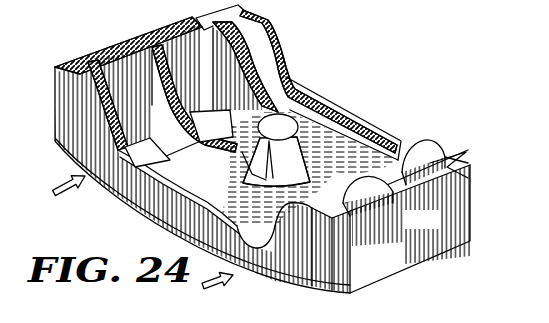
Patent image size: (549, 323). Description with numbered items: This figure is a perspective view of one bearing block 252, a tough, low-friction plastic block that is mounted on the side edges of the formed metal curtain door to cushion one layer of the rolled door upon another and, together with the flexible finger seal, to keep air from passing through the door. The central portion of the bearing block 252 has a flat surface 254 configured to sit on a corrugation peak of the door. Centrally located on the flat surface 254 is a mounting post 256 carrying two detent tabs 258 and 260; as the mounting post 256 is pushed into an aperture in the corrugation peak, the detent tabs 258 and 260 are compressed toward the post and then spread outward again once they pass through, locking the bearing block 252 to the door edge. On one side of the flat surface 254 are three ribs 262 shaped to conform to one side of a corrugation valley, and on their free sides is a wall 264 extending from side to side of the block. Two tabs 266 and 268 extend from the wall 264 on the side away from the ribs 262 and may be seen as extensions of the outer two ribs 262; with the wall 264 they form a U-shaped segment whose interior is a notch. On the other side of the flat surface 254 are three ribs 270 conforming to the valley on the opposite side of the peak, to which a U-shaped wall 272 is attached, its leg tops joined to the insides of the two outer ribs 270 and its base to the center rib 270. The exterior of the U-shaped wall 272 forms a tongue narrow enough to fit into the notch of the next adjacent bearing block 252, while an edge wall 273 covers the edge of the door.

The bearing block 252 is at (375, 63).
The flat surface 254 is at (197, 198).
The mounting post 256 is at (293, 179).
The detent tab 258 is at (242, 152).
The detent tab 260 is at (320, 127).
The rib 262 is at (182, 38).
The wall 264 is at (130, 52).
The tab 266 is at (77, 67).
The tab 268 is at (218, 8).
The rib 270 is at (435, 132).
The U-shaped wall 272 is at (405, 196).
The edge wall 273 is at (302, 97).